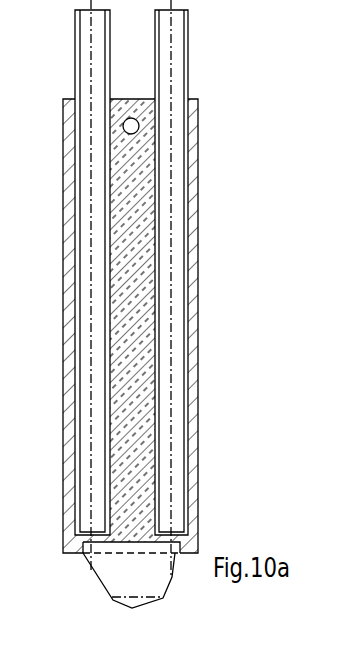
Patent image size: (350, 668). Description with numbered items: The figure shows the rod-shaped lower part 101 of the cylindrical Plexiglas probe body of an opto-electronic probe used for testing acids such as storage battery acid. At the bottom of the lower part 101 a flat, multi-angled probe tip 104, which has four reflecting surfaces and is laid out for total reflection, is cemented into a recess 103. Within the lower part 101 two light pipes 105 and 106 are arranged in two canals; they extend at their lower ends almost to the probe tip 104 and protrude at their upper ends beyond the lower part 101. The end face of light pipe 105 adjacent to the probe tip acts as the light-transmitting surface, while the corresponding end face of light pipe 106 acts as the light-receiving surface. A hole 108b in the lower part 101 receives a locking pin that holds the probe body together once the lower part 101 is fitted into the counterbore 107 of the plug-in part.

The lower part 101 is at (199, 407).
The recess 103 is at (85, 553).
The probe tip 104 is at (113, 577).
The light pipe 105 is at (76, 288).
The light pipe 106 is at (185, 309).
The counterbore 107 is at (222, 5).
The hole 108b is at (130, 118).